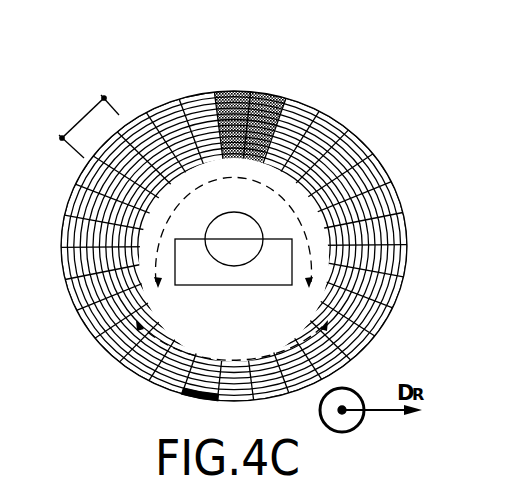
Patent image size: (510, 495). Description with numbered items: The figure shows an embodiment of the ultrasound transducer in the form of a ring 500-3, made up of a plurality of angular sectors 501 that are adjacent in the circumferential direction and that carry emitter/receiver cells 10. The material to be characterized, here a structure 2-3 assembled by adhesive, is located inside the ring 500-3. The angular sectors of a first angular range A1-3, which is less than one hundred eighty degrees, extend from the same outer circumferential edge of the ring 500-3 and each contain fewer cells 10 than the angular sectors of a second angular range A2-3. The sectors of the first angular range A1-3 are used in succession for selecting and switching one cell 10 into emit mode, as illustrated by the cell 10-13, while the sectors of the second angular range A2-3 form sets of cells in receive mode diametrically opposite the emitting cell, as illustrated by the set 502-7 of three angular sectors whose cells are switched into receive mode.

The ring 500-3 is at (131, 91).
The angular sector 501 is at (83, 126).
The set of angular sectors 502-7 is at (268, 91).
The emitter/receiver cell 10 is at (380, 169).
The second angular range A2-3 is at (238, 172).
The structure assembled by adhesive 2-3 is at (233, 277).
The first angular range A1-3 is at (226, 360).
The cell switched into emit mode 10-13 is at (188, 398).